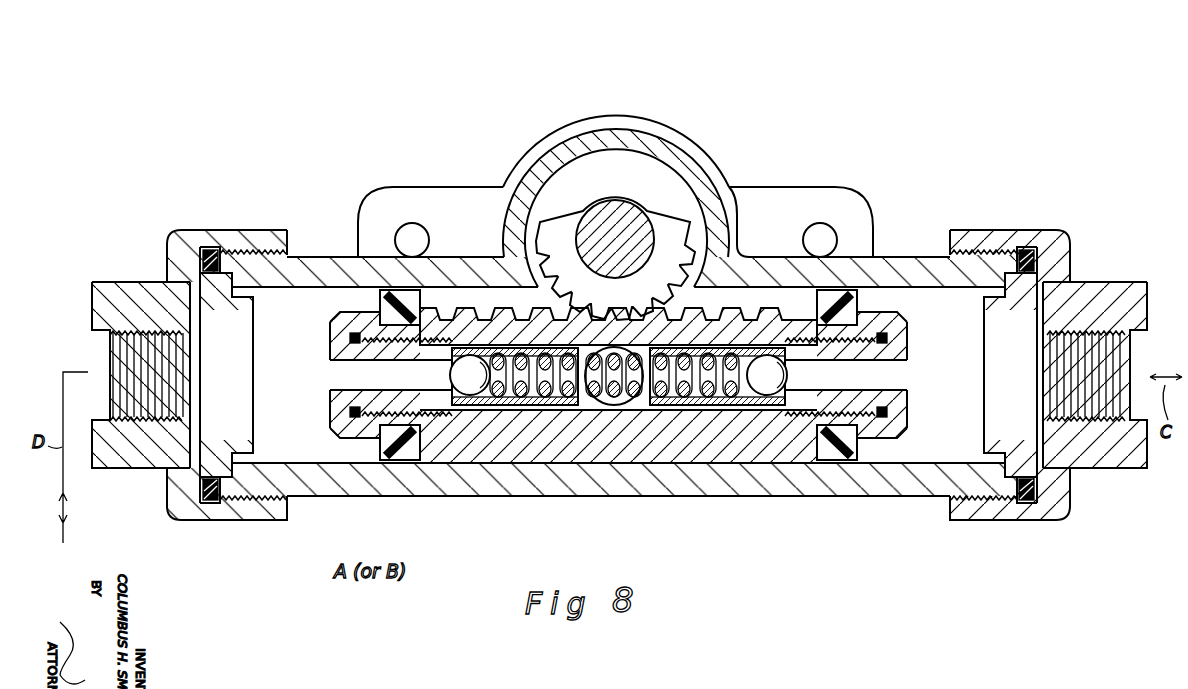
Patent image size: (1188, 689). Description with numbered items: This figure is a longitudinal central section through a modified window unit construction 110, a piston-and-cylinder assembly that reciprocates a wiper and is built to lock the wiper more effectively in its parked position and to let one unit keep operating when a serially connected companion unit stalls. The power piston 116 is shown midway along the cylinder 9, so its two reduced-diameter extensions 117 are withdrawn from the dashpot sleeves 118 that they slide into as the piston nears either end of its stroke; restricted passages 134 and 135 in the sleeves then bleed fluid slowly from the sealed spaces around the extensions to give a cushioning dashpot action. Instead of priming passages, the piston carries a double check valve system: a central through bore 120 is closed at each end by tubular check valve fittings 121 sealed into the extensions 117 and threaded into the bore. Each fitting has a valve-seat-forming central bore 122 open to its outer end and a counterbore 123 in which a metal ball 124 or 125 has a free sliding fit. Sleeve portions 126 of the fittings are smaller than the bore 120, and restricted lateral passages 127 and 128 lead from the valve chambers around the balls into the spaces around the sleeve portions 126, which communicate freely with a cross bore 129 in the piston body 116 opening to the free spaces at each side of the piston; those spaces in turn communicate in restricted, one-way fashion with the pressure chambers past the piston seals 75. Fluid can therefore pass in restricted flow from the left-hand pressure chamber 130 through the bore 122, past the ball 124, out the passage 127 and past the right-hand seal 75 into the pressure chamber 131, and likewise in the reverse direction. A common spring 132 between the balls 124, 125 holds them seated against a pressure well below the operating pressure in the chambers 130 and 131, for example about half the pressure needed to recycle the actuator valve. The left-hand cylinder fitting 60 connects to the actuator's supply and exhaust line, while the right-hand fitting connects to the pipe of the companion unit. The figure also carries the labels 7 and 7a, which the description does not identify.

The window unit construction 110 is at (618, 324).
The cylinder 9 is at (360, 486).
The left hand cylinder fitting 60 is at (193, 213).
The dashpot sleeves 118 is at (225, 288).
The restricted passage 134 is at (200, 456).
The restricted passage 135 is at (1030, 468).
The left hand pressure chamber 130 is at (300, 382).
The pressure chamber 131 is at (948, 386).
The valve-seat-forming central bore 122 is at (352, 385).
The common spring 132 is at (553, 350).
The power piston 116 is at (622, 473).
The tubular check valve fittings 121 is at (430, 440).
The seals 75 is at (393, 299).
The reduced diameter extensions 117 is at (376, 314).
The counterbores 123 is at (505, 405).
The restricted lateral passage 127 is at (456, 347).
The restricted lateral passage 128 is at (772, 352).
The cross bore 129 is at (621, 404).
The central through bore 120 is at (590, 406).
The sleeve portions 126 is at (513, 398).
The metal ball 124 is at (471, 396).
The metal ball 125 is at (758, 396).
The pinion gear 7 is at (672, 222).
The shaft 7a is at (611, 206).